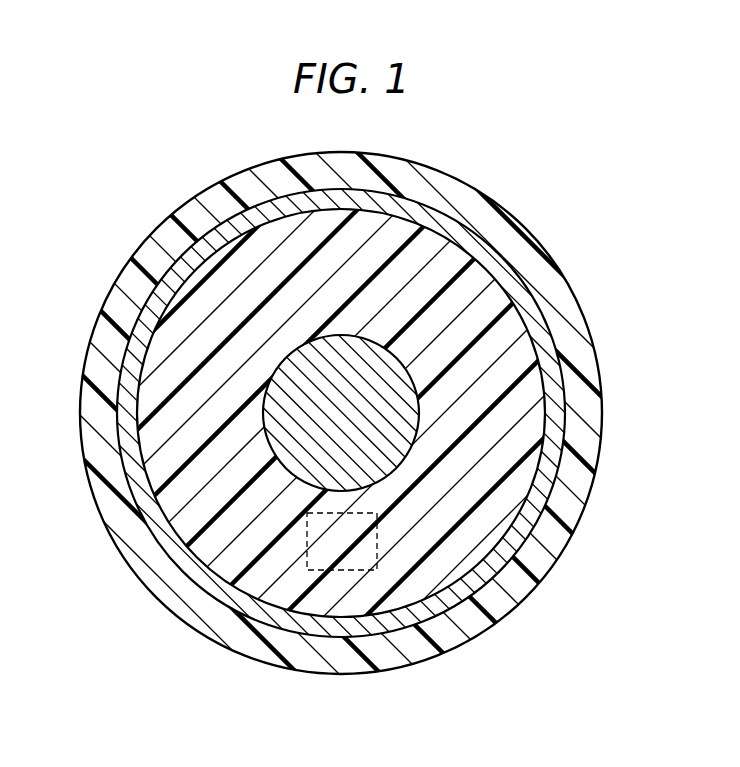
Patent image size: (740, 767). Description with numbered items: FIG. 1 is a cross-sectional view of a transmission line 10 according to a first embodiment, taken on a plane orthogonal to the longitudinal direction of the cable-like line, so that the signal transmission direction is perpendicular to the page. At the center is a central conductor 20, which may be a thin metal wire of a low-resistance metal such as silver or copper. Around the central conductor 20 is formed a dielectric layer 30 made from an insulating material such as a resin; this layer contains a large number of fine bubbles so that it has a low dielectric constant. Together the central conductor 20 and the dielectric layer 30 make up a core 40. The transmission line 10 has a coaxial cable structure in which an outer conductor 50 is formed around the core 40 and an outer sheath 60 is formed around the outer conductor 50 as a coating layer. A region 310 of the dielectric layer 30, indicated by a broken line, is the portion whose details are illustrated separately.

The transmission line 10 is at (589, 189).
The central conductor 20 is at (377, 360).
The dielectric layer 30 is at (485, 370).
The core 40 is at (678, 245).
The outer conductor 50 is at (545, 478).
The outer sheath 60 is at (545, 538).
The region 310 is at (363, 557).